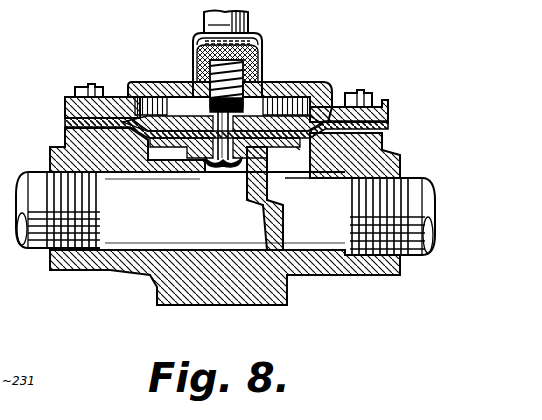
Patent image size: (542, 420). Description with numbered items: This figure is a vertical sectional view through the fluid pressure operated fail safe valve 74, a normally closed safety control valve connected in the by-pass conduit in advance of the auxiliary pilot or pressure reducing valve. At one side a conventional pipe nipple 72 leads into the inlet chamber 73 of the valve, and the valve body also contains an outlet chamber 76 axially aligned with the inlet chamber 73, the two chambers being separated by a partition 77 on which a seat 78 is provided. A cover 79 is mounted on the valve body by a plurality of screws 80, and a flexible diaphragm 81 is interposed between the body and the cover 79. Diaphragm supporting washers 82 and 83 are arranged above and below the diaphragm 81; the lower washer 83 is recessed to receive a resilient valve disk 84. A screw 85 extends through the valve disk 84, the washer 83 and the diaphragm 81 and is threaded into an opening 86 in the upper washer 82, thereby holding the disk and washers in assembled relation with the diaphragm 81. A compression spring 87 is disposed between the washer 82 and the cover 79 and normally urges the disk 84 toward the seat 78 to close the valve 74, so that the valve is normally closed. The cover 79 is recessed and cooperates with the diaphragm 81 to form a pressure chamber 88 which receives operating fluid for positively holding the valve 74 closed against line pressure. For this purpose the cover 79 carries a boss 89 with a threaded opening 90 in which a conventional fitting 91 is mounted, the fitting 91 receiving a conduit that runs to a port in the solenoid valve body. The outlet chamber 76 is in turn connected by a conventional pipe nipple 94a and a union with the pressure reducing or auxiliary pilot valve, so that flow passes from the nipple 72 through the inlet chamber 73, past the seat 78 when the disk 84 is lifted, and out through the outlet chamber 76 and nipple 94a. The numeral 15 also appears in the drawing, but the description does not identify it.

The housing body 15 is at (157, 298).
The pipe nipple 72 is at (420, 184).
The inlet chamber 73 is at (330, 256).
The fail safe valve 74 is at (295, 78).
The outlet chamber 76 is at (149, 249).
The partition 77 is at (279, 219).
The seat 78 is at (263, 160).
The cover 79 is at (384, 104).
The screws 80 is at (80, 87).
The flexible diaphragm 81 is at (382, 122).
The diaphragm supporting washer 82 is at (266, 116).
The diaphragm supporting washer 83 is at (298, 150).
The resilient valve disk 84 is at (205, 162).
The screw 85 is at (236, 168).
The opening 86 is at (205, 116).
The compression spring 87 is at (260, 70).
The pressure chamber 88 is at (156, 82).
The boss 89 is at (254, 34).
The threaded opening 90 is at (194, 44).
The fitting 91 is at (203, 14).
The pipe nipple 94a is at (36, 250).